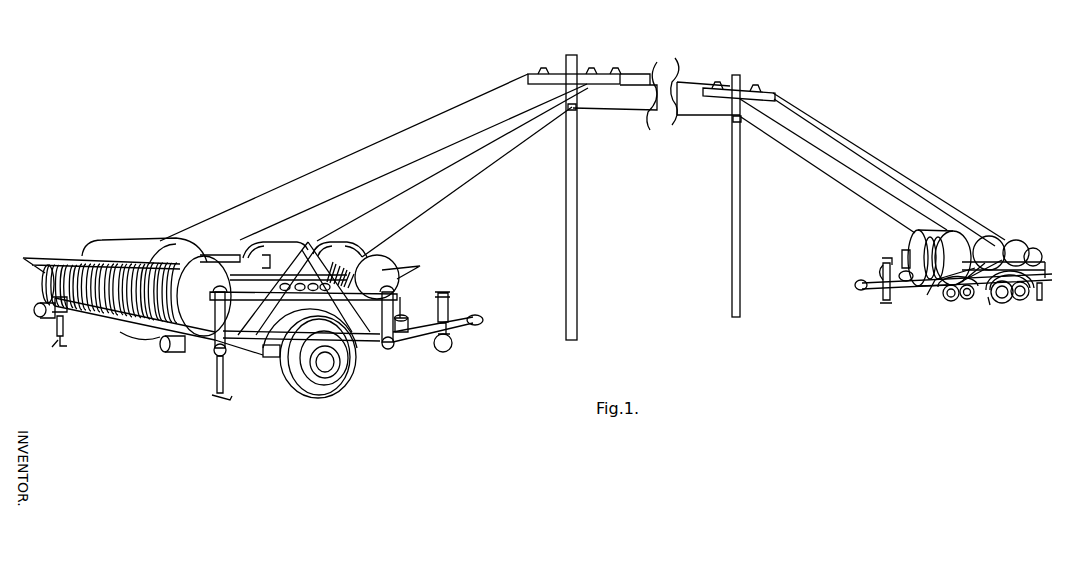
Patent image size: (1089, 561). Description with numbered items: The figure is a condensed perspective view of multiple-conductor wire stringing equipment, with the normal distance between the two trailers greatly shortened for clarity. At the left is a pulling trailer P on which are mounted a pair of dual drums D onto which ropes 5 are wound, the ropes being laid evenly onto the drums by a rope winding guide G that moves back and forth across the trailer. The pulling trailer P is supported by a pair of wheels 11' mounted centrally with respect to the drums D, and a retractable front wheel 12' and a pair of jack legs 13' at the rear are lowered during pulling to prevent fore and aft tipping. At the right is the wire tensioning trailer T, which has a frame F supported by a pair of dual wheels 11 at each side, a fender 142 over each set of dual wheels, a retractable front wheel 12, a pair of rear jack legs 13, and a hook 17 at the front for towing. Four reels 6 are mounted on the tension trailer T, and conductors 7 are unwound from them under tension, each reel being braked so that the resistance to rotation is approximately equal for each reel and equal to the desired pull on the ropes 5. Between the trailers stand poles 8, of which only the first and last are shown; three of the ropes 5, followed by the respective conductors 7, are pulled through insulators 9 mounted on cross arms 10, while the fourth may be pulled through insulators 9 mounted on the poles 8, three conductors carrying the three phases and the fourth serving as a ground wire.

The ropes 5 is at (392, 132).
The reels 6 is at (910, 240).
The conductors 7 is at (858, 146).
The poles 8 is at (566, 230).
The insulators 9 is at (541, 72).
The cross arms 10 is at (608, 84).
The dual wheels 11 is at (988, 309).
The wheels 11' is at (329, 360).
The retractable front wheel 12 is at (875, 292).
The retractable front wheel 12' is at (457, 349).
The jack legs 13 is at (1052, 303).
The jack legs 13' is at (143, 374).
The hook 17 is at (855, 287).
The fender 142 is at (989, 306).
The dual drums D is at (399, 249).
The frame F is at (406, 350).
The rope winding guide G is at (111, 231).
The pulling trailer P is at (171, 391).
The tension trailer T is at (973, 317).